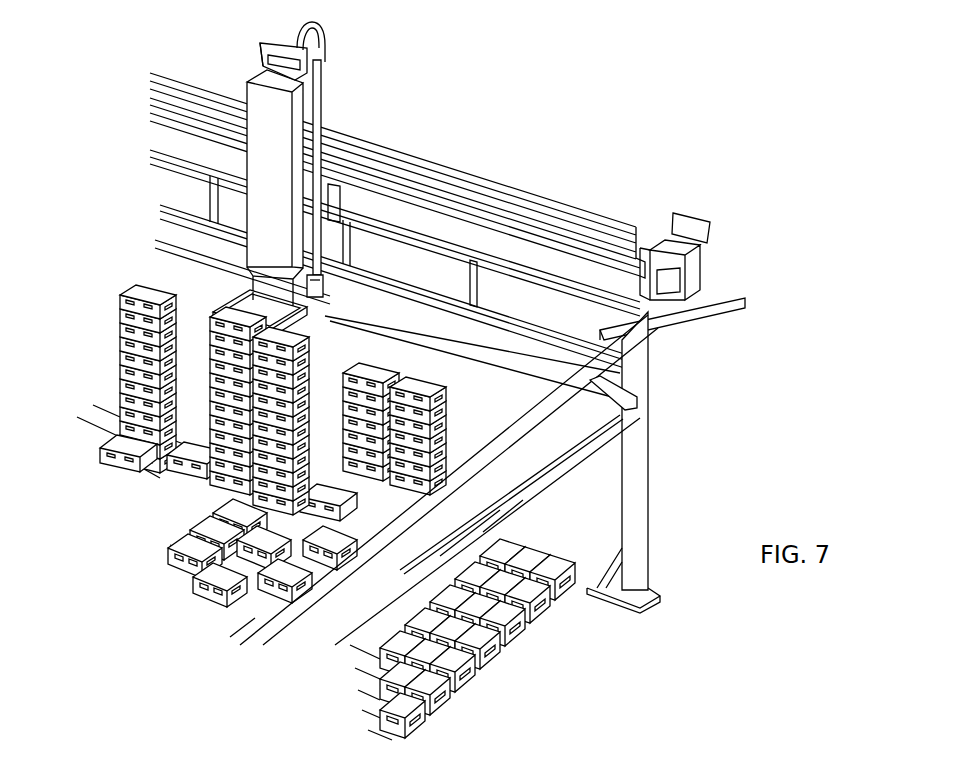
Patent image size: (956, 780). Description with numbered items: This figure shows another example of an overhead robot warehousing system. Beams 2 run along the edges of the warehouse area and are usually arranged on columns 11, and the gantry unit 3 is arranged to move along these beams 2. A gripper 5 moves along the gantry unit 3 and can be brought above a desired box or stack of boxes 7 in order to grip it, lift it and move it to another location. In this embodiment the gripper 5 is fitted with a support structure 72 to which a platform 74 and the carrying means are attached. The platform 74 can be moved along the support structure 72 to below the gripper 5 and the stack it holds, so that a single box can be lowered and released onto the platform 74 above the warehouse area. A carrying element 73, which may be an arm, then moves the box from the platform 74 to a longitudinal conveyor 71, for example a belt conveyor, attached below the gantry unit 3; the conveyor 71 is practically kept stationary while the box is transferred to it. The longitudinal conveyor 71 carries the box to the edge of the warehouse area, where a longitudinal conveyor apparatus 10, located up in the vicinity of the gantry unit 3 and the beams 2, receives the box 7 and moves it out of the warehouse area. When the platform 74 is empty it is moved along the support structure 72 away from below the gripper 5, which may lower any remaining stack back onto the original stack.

The beam 2 is at (512, 417).
The gantry unit 3 is at (470, 240).
The gripper 5 is at (240, 90).
The box 7 is at (138, 287).
The longitudinal conveyor apparatus 10 is at (684, 327).
The column 11 is at (637, 523).
The longitudinal conveyor 71 is at (178, 232).
The support structure 72 is at (325, 286).
The carrying element 73 is at (214, 322).
The platform 74 is at (252, 300).